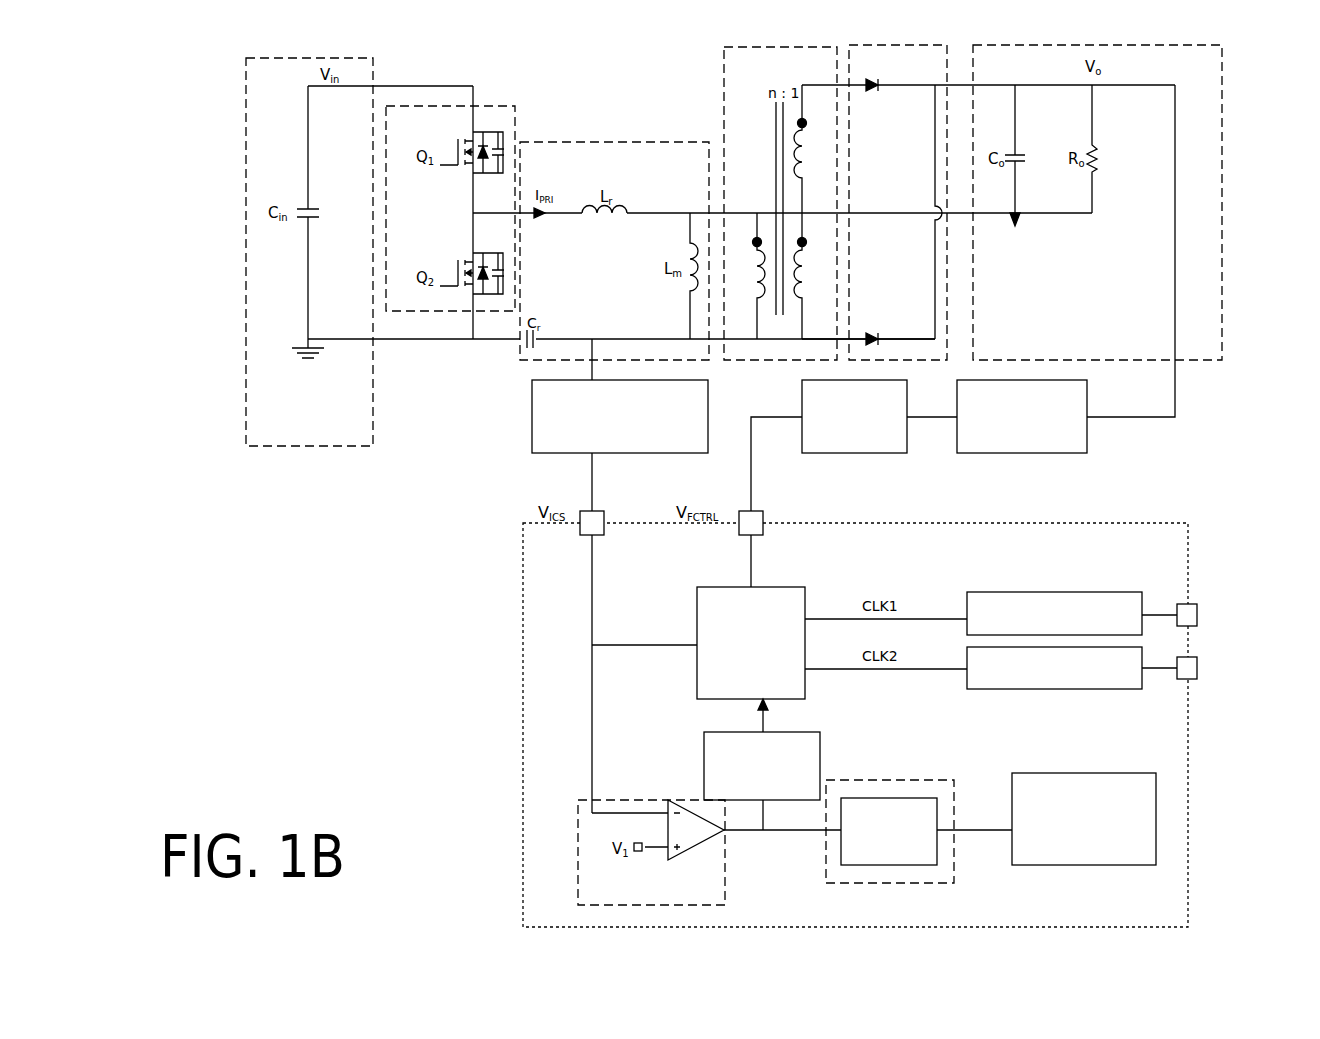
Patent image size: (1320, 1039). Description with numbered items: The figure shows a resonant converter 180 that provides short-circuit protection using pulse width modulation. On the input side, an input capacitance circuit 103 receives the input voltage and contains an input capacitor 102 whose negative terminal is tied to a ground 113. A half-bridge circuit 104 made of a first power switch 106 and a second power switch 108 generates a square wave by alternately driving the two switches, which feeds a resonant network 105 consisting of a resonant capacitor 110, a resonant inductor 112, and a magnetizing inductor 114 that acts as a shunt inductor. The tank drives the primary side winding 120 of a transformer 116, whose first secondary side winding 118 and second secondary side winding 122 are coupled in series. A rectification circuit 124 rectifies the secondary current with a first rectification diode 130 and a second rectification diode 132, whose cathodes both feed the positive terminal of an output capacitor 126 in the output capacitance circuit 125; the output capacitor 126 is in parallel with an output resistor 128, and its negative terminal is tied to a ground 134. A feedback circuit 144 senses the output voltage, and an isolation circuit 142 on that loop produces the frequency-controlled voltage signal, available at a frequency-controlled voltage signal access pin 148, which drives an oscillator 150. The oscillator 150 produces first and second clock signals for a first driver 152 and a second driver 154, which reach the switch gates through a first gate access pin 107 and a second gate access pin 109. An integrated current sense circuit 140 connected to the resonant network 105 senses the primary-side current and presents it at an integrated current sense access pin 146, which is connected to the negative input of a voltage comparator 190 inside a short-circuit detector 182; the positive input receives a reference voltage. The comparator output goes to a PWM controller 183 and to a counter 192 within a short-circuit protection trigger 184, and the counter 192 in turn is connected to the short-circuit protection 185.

The resonant converter 180 is at (216, 38).
The input capacitor 102 is at (306, 210).
The input capacitance circuit 103 is at (272, 58).
The bridge circuit 104 is at (492, 106).
The resonant network 105 is at (584, 142).
The first power switch 106 is at (460, 172).
The first gate access pin 107 is at (1192, 604).
The second power switch 108 is at (456, 262).
The second gate access pin 109 is at (1197, 678).
The resonant capacitor 110 is at (538, 338).
The resonant inductor 112 is at (626, 210).
The ground 113 is at (300, 354).
The magnetizing inductor 114 is at (688, 290).
The transformer 116 is at (724, 76).
The first secondary side winding 118 is at (806, 166).
The primary side winding 120 is at (745, 276).
The second secondary side winding 122 is at (808, 282).
The rectification circuit 124 is at (947, 45).
The output capacitance circuit 125 is at (1222, 60).
The output capacitor 126 is at (1036, 140).
The output resistor 128 is at (1096, 158).
The first rectification diode 130 is at (873, 93).
The second rectification diode 132 is at (873, 334).
The ground 134 is at (1020, 226).
The integrated current sense circuit 140 is at (620, 416).
The isolation circuit 142 is at (854, 416).
The feedback circuit 144 is at (1022, 416).
The integrated current sense access pin 146 is at (606, 516).
The frequency-controlled voltage signal access pin 148 is at (766, 516).
The oscillator 150 is at (751, 643).
The first driver 152 is at (1054, 613).
The second driver 154 is at (1054, 668).
The short-circuit detector 182 is at (578, 820).
The PWM controller 183 is at (762, 766).
The short-circuit protection trigger 184 is at (922, 780).
The short-circuit protection 185 is at (1084, 819).
The voltage comparator 190 is at (682, 856).
The counter 192 is at (889, 831).